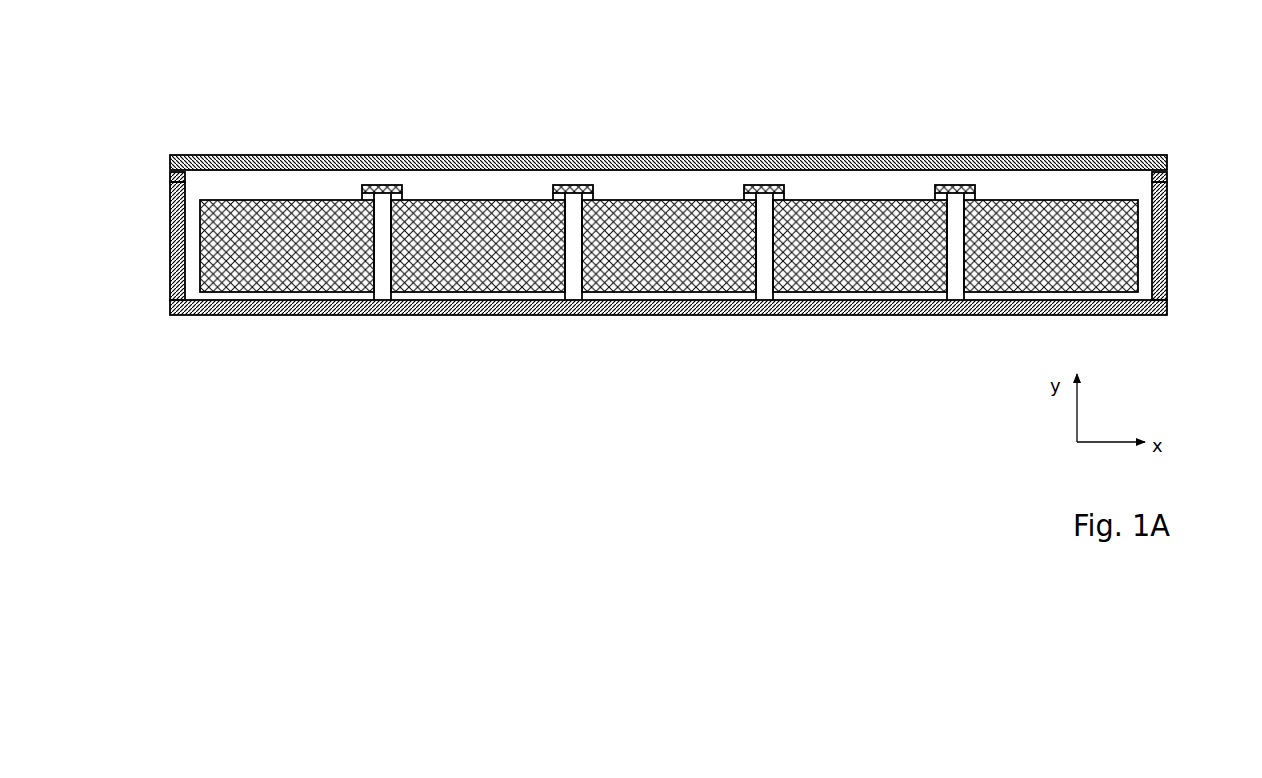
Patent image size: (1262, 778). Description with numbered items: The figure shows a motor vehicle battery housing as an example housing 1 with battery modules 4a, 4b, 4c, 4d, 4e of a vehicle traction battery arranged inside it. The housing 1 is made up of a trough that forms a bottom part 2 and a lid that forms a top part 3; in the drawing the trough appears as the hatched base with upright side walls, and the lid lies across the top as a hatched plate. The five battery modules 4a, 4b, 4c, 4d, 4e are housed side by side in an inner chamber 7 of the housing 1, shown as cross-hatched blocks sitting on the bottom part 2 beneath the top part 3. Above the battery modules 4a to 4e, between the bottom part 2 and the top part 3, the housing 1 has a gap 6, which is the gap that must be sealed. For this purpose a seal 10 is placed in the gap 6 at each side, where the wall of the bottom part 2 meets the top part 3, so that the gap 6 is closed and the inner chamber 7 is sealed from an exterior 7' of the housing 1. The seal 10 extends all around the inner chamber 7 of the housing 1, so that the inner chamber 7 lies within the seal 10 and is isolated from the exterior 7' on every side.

The housing 1 is at (873, 106).
The bottom part 2 is at (448, 306).
The top part 3 is at (412, 155).
The battery module 4a is at (287, 246).
The battery module 4b is at (478, 246).
The battery module 4c is at (669, 246).
The battery module 4d is at (860, 246).
The battery module 4e is at (1051, 246).
The gap 6 is at (162, 170).
The inner chamber 7 is at (667, 183).
The exterior 7' is at (670, 126).
The seal 10 is at (170, 183).